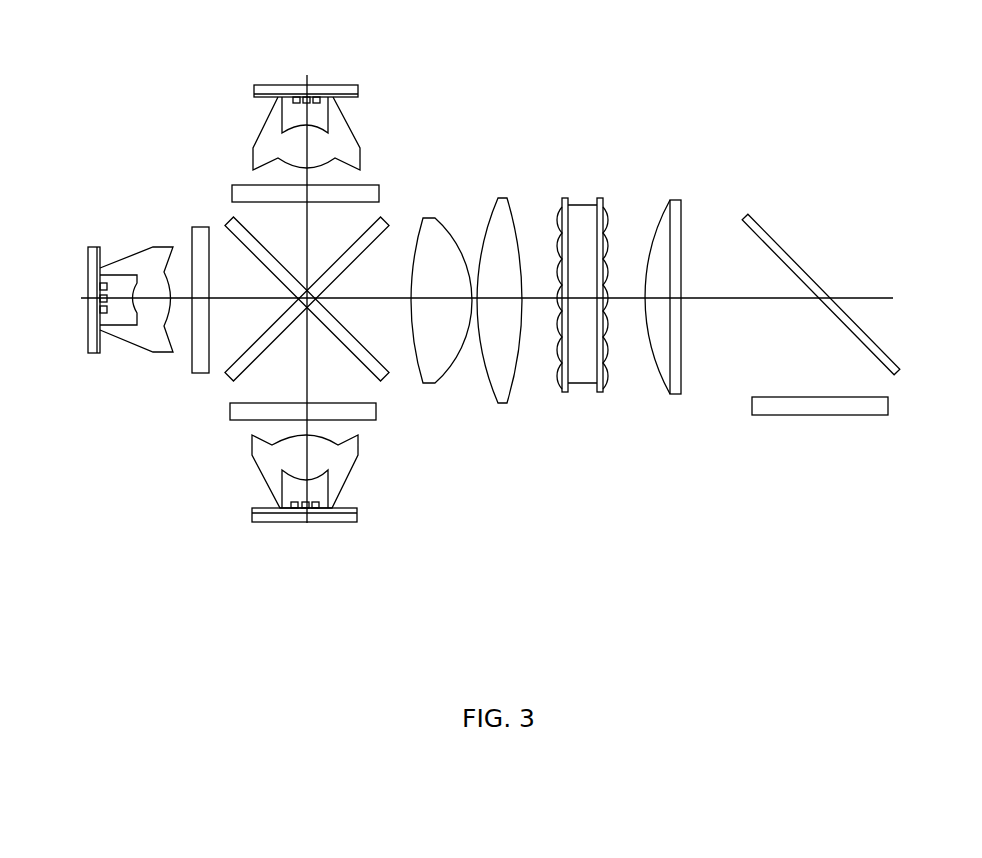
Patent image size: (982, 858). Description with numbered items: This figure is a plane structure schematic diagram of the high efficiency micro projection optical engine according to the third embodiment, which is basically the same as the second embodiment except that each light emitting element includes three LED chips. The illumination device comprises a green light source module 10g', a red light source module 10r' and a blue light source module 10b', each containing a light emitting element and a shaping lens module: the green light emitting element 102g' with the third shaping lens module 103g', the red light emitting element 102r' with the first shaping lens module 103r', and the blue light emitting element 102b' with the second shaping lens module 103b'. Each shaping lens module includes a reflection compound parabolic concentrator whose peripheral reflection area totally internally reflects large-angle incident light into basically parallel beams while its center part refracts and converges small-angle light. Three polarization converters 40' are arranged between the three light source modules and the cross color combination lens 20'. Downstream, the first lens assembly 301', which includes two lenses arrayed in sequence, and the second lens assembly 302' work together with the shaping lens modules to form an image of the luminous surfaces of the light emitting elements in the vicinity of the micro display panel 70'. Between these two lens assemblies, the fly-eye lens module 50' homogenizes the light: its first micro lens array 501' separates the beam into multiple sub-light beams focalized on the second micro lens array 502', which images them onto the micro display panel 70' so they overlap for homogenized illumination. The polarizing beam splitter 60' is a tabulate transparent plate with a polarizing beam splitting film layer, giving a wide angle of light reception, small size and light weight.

The green light source module 10g' is at (94, 251).
The green light emitting element 102g' is at (61, 272).
The third shaping lens module 103g' is at (130, 271).
The red light source module 10r' is at (376, 89).
The red light emitting element 102r' is at (348, 56).
The first shaping lens module 103r' is at (350, 114).
The blue light source module 10b' is at (386, 495).
The blue light emitting element 102b' is at (352, 527).
The second shaping lens module 103b' is at (352, 471).
The polarization converter 40' is at (288, 265).
The cross color combination lens 20' is at (243, 352).
The first lens assembly 301' is at (466, 279).
The fly-eye lens module 50' is at (632, 350).
The first micro lens array 501' is at (598, 327).
The second micro lens array 502' is at (652, 327).
The second lens assembly 302' is at (699, 251).
The polarizing beam splitter 60' is at (821, 247).
The micro display panel 70' is at (820, 450).